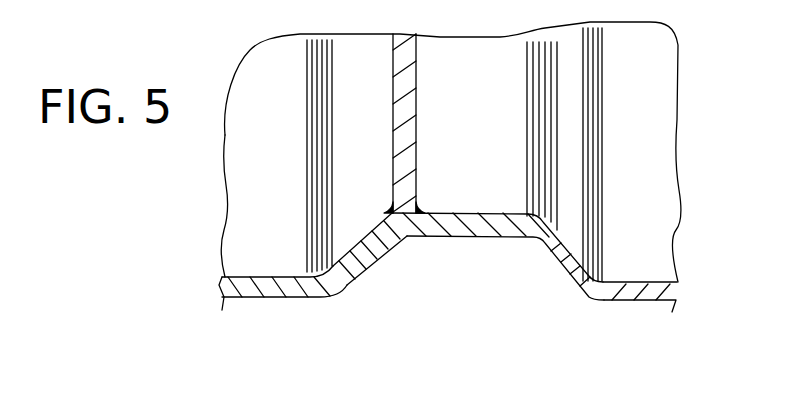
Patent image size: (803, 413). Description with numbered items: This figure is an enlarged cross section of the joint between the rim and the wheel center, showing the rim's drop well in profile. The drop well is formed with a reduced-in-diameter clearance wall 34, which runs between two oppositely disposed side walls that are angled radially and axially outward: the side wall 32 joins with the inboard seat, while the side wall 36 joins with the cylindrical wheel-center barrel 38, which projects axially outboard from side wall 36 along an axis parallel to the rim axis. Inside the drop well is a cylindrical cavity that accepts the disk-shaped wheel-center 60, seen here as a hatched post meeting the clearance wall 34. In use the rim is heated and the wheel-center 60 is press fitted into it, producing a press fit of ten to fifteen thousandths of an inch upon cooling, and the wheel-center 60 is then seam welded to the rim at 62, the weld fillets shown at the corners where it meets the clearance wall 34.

The wheel-center 60 is at (418, 66).
The seam weld 62 is at (421, 212).
The clearance wall 34 is at (483, 212).
The drop well side wall 36 is at (372, 263).
The wheel-center barrel 38 is at (262, 300).
The drop well side wall 32 is at (557, 280).